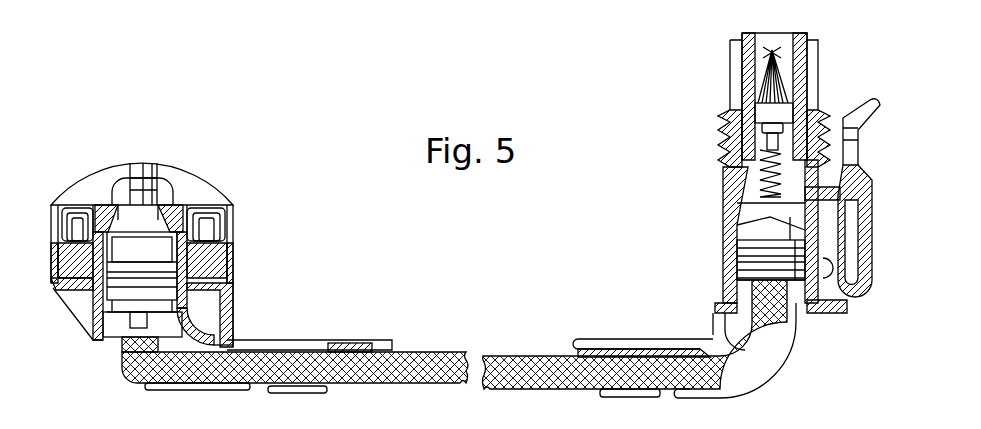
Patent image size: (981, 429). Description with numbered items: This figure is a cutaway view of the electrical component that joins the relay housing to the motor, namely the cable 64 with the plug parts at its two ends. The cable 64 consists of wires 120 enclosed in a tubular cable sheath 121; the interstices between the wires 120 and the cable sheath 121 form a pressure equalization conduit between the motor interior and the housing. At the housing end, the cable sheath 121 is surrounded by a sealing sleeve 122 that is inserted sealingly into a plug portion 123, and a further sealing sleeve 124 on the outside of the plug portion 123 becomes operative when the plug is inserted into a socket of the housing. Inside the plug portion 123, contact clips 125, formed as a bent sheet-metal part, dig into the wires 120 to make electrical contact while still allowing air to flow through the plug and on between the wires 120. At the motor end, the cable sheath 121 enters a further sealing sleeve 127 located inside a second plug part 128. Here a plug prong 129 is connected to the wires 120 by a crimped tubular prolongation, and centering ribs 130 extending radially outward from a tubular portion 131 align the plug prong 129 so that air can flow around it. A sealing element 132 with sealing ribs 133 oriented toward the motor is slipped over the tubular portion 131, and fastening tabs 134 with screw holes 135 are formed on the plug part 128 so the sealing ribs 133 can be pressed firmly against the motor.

The cable 64 is at (430, 348).
The wires 120 is at (758, 188).
The cable sheath 121 is at (522, 355).
The sealing sleeve 122 is at (758, 230).
The plug portion 123 is at (723, 293).
The further sealing sleeve 124 is at (720, 117).
The contact clips 125 is at (763, 58).
The further sealing sleeve 127 is at (162, 283).
The second plug part 128 is at (212, 287).
The plug prong 129 is at (158, 190).
The centering ribs 130 is at (168, 205).
The tubular portion 131 is at (225, 260).
The sealing element 132 is at (223, 237).
The sealing ribs 133 is at (80, 205).
The fastening tabs 134 is at (90, 178).
The screw holes 135 is at (122, 190).